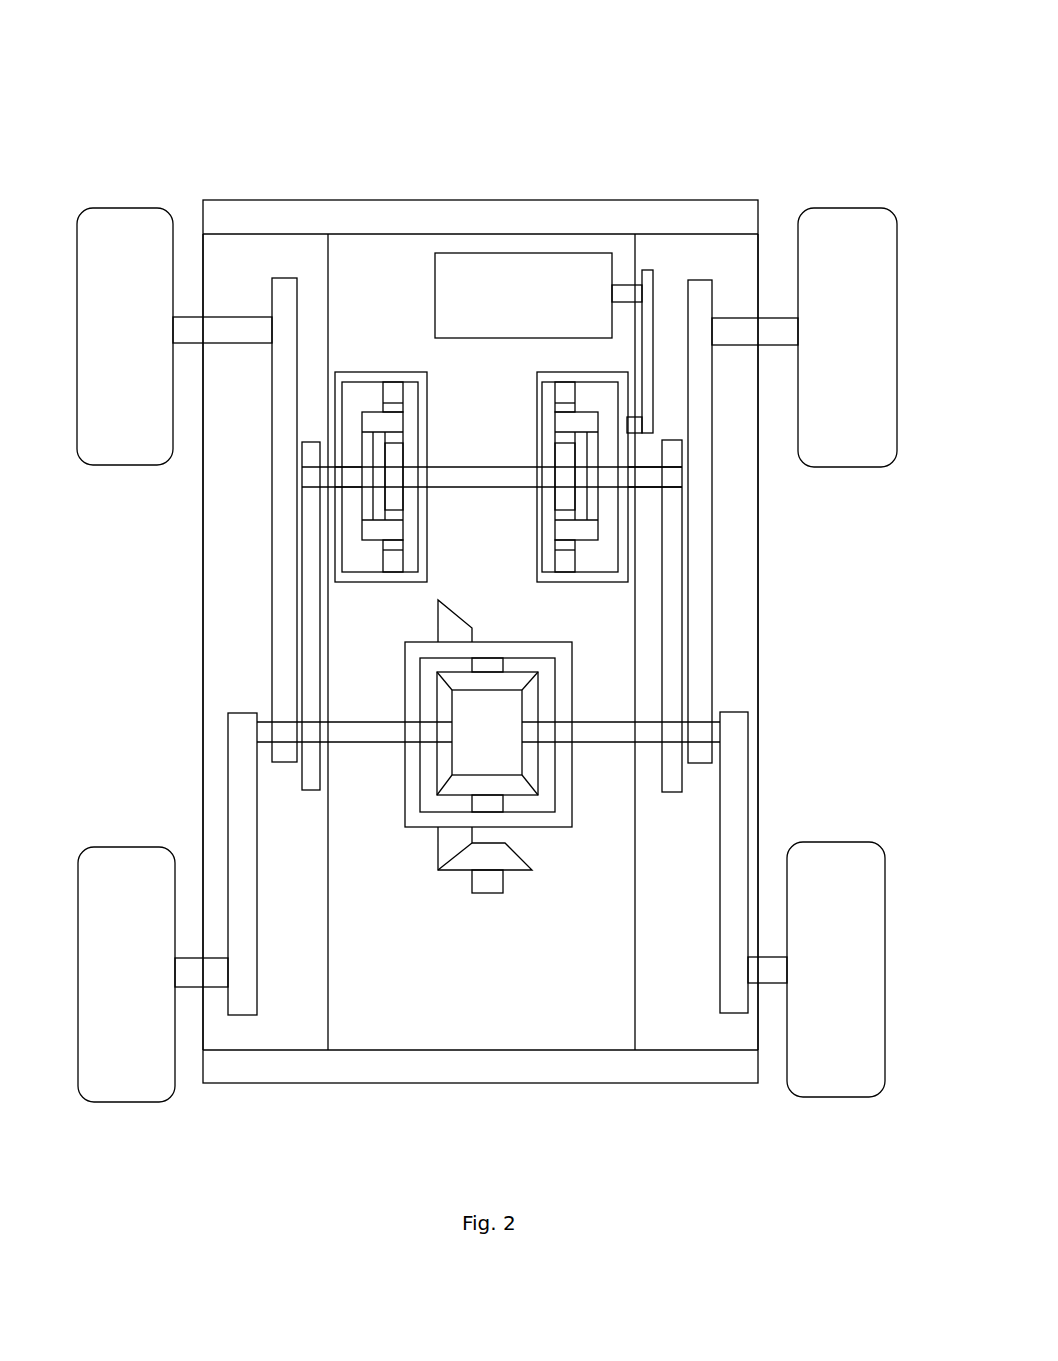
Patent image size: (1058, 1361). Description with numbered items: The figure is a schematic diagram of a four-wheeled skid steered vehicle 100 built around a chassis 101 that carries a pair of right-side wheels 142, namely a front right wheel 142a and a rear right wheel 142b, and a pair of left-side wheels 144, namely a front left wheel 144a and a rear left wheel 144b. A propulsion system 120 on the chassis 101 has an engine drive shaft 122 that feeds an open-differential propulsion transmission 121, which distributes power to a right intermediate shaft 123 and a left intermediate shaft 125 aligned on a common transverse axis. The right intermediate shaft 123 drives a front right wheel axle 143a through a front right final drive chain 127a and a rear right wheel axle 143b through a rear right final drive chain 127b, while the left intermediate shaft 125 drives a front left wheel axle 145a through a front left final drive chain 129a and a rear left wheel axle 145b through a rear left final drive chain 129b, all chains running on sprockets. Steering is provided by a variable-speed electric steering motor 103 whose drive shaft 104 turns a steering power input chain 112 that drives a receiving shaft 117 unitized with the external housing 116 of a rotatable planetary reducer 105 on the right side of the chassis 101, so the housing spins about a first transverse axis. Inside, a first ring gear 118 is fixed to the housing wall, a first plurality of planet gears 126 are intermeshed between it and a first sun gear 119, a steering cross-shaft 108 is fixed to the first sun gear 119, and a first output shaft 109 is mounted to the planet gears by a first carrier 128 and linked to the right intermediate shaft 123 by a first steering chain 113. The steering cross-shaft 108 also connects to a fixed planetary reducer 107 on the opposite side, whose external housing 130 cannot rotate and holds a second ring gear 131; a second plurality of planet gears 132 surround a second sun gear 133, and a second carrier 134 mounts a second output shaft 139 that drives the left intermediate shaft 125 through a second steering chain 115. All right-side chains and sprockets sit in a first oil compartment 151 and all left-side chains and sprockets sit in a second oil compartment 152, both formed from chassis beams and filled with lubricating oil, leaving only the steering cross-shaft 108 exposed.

The skid steered vehicle 100 is at (398, 130).
The chassis 101 is at (408, 1073).
The variable-speed electric steering motor 103 is at (500, 275).
The drive shaft 104 is at (622, 292).
The rotatable planetary reducer 105 is at (603, 393).
The fixed planetary reducer 107 is at (369, 385).
The steering cross-shaft 108 is at (483, 475).
The first output shaft 109 is at (647, 480).
The steering power input chain 112 is at (648, 290).
The first steering chain 113 is at (668, 673).
The second steering chain 115 is at (308, 672).
The external housing 116 is at (588, 580).
The receiving shaft 117 is at (633, 433).
The first ring gear 118 is at (567, 567).
The first sun gear 119 is at (558, 493).
The propulsion system 120 is at (562, 910).
The open-differential propulsion transmission 121 is at (417, 815).
The engine drive shaft 122 is at (477, 882).
The right intermediate shaft 123 is at (605, 737).
The left intermediate shaft 125 is at (357, 737).
The first plurality of planet gears 126 is at (558, 525).
The front right final drive chain 127a is at (702, 628).
The rear right final drive chain 127b is at (733, 1005).
The first carrier 128 is at (593, 503).
The front left final drive chain 129a is at (273, 620).
The rear left final drive chain 129b is at (242, 1002).
The external housing 130 is at (360, 580).
The second ring gear 131 is at (395, 567).
The second plurality of planet gears 132 is at (395, 532).
The second sun gear 133 is at (397, 502).
The second carrier 134 is at (363, 498).
The second output shaft 139 is at (350, 478).
The right-side wheels 142 is at (872, 652).
The front right wheel 142a is at (858, 228).
The rear right wheel 142b is at (833, 1077).
The front right wheel axle 143a is at (780, 332).
The rear right wheel axle 143b is at (770, 973).
The left-side wheels 144 is at (107, 661).
The front left wheel 144a is at (125, 227).
The rear left wheel 144b is at (127, 1087).
The front left wheel axle 145a is at (188, 327).
The rear left wheel axle 145b is at (187, 977).
The first oil compartment 151 is at (742, 692).
The second oil compartment 152 is at (217, 690).